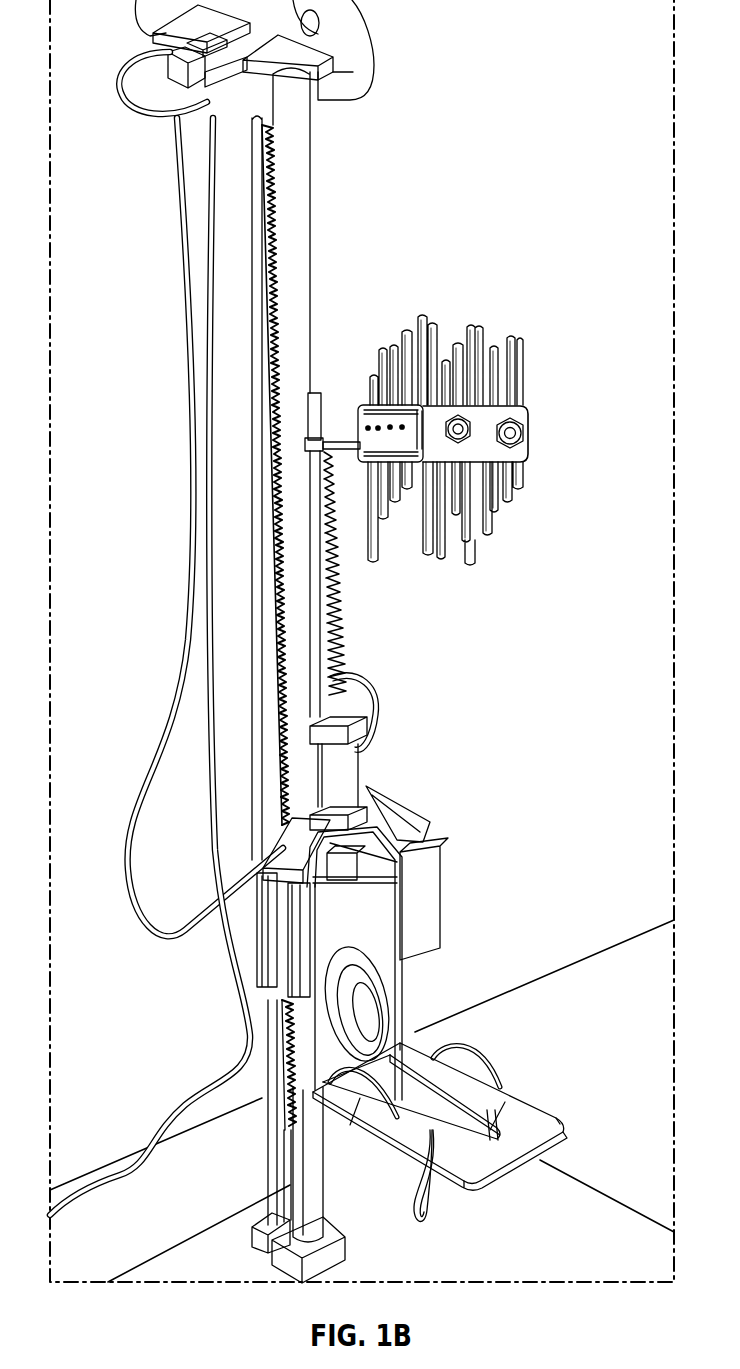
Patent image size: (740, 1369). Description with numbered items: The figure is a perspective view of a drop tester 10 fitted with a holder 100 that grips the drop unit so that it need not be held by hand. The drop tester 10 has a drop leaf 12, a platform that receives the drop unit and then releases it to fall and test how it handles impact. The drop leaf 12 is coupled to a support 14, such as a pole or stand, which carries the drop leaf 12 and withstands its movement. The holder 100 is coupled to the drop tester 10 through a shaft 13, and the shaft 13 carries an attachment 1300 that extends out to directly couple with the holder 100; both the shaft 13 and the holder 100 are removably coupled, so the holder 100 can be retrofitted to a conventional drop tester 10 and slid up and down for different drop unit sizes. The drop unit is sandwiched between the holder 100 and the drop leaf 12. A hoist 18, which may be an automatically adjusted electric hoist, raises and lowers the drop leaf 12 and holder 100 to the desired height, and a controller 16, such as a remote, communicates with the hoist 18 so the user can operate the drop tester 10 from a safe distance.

The drop tester 10 is at (403, 154).
The drop leaf 12 is at (537, 1120).
The shaft 13 is at (317, 647).
The support 14 is at (298, 212).
The controller 16 is at (428, 898).
The hoist 18 is at (357, 46).
The holder 100 is at (544, 442).
The attachment 1300 is at (330, 440).